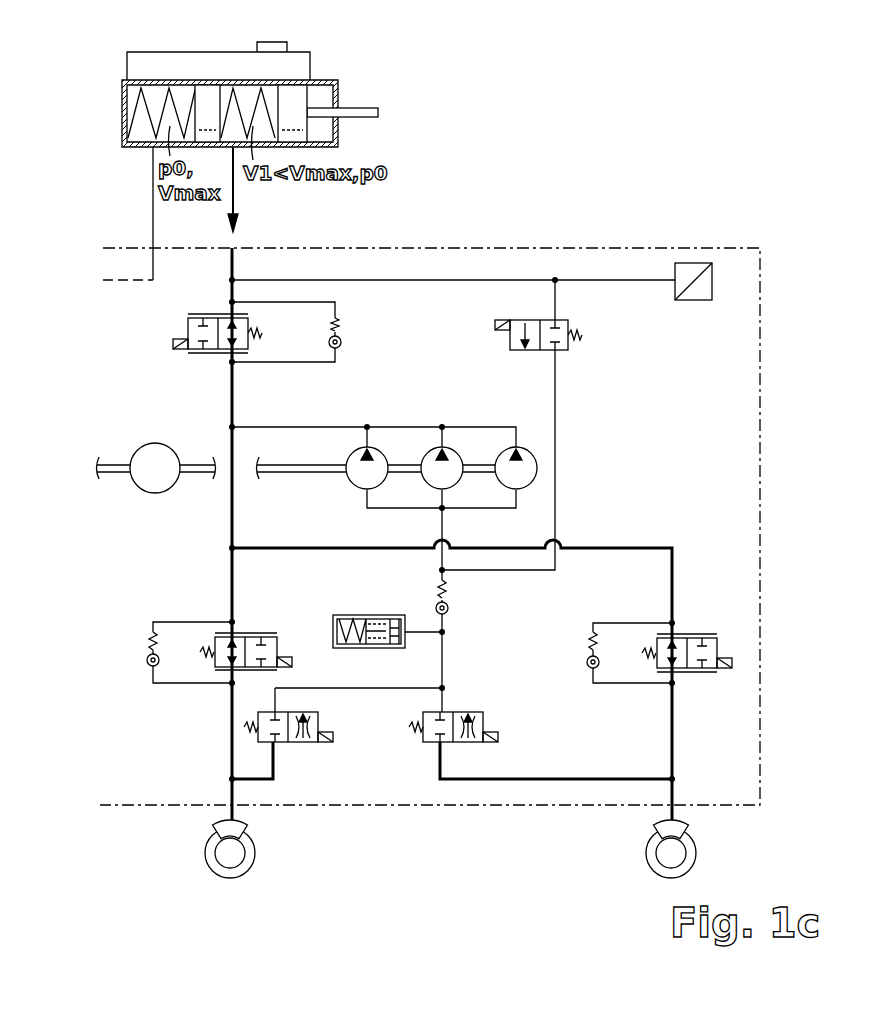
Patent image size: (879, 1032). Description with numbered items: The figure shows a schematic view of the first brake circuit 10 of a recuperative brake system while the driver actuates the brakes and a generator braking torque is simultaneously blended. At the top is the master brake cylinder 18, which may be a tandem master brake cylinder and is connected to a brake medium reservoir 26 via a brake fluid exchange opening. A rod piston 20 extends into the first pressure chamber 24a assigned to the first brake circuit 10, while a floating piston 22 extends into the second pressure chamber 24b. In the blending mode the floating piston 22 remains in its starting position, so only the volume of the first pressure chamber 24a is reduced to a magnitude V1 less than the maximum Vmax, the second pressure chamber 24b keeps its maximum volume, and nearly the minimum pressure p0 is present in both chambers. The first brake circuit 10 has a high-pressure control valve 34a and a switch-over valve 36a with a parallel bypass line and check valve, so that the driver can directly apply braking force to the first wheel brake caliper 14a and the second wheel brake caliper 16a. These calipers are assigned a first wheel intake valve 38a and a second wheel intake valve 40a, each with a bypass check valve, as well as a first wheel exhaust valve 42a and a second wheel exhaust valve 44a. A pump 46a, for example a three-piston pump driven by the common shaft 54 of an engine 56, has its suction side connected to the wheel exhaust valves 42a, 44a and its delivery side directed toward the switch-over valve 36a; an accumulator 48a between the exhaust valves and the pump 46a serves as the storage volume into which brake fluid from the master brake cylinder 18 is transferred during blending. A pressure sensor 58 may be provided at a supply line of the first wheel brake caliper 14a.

The first brake circuit 10 is at (120, 688).
The first wheel brake caliper 14a is at (656, 826).
The second wheel brake caliper 16a is at (215, 826).
The master brake cylinder 18 is at (122, 110).
The rod piston 20 is at (296, 94).
The floating piston 22 is at (210, 94).
The first pressure chamber 24a is at (236, 95).
The second pressure chamber 24b is at (137, 135).
The brake medium reservoir 26 is at (140, 68).
The high-pressure control valve 34a is at (582, 322).
The switch-over valve 36a is at (194, 353).
The first wheel intake valve 38a is at (706, 634).
The second wheel intake valve 40a is at (263, 633).
The first wheel exhaust valve 42a is at (476, 712).
The second wheel exhaust valve 44a is at (312, 742).
The pump 46a is at (382, 448).
The accumulator 48a is at (372, 615).
The common shaft 54 is at (113, 462).
The engine 56 is at (155, 493).
The pressure sensor 58 is at (692, 300).